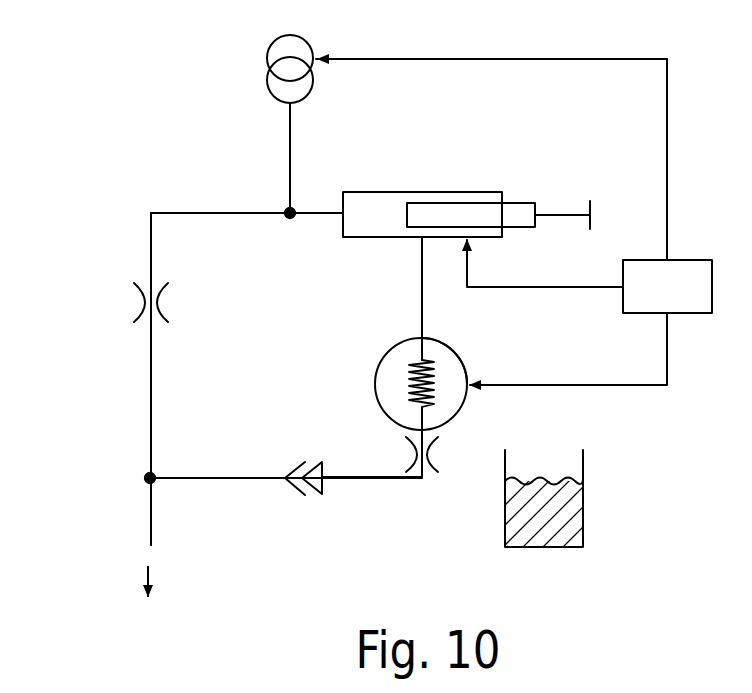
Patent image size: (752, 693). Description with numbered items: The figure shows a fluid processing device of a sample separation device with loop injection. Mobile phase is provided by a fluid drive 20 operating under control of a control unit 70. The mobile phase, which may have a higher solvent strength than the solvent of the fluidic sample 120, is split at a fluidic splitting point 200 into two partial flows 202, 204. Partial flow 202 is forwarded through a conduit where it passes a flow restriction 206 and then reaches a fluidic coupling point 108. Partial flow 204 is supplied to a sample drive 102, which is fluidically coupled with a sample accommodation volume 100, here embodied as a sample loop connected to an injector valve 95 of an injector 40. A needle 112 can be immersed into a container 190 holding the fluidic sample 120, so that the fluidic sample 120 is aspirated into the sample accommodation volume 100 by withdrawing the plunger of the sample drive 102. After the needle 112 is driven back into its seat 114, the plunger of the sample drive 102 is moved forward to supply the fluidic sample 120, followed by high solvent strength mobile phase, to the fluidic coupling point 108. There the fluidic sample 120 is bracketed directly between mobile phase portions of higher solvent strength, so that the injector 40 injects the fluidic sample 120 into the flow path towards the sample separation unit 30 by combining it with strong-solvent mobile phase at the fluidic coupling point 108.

The fluid drive 20 is at (313, 74).
The sample drive 102 is at (460, 192).
The control unit 70 is at (667, 286).
The fluidic splitting point 200 is at (289, 220).
The partial flow 202 is at (260, 203).
The partial flow 204 is at (320, 203).
The flow restriction 206 is at (134, 302).
The injector 40 is at (386, 336).
The injector valve 95 is at (462, 355).
The sample accommodation volume 100 is at (410, 390).
The fluidic coupling point 108 is at (142, 478).
The seat 114 is at (296, 490).
The needle 112 is at (318, 490).
The container 190 is at (600, 478).
The fluidic sample 120 is at (583, 508).
The sample separation unit 30 is at (135, 640).